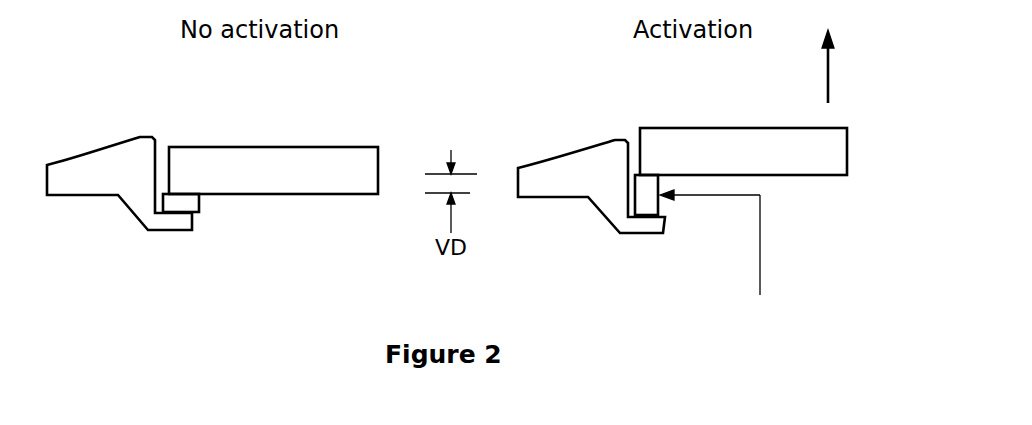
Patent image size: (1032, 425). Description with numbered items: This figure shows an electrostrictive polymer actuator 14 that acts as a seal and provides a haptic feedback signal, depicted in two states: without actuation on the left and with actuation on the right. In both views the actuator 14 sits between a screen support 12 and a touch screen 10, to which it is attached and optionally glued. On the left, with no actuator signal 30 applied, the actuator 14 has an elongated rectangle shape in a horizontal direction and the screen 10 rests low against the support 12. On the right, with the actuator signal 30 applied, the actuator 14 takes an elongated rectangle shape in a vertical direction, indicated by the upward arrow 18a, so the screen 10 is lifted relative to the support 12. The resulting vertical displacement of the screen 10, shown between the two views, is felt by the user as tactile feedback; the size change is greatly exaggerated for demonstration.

The screen support 12 is at (90, 157).
The touch screen 10 is at (300, 146).
The electrostrictive polymer actuator 14 is at (199, 212).
The vertical displacement arrow 18a is at (828, 65).
The actuator signal 30 is at (760, 220).